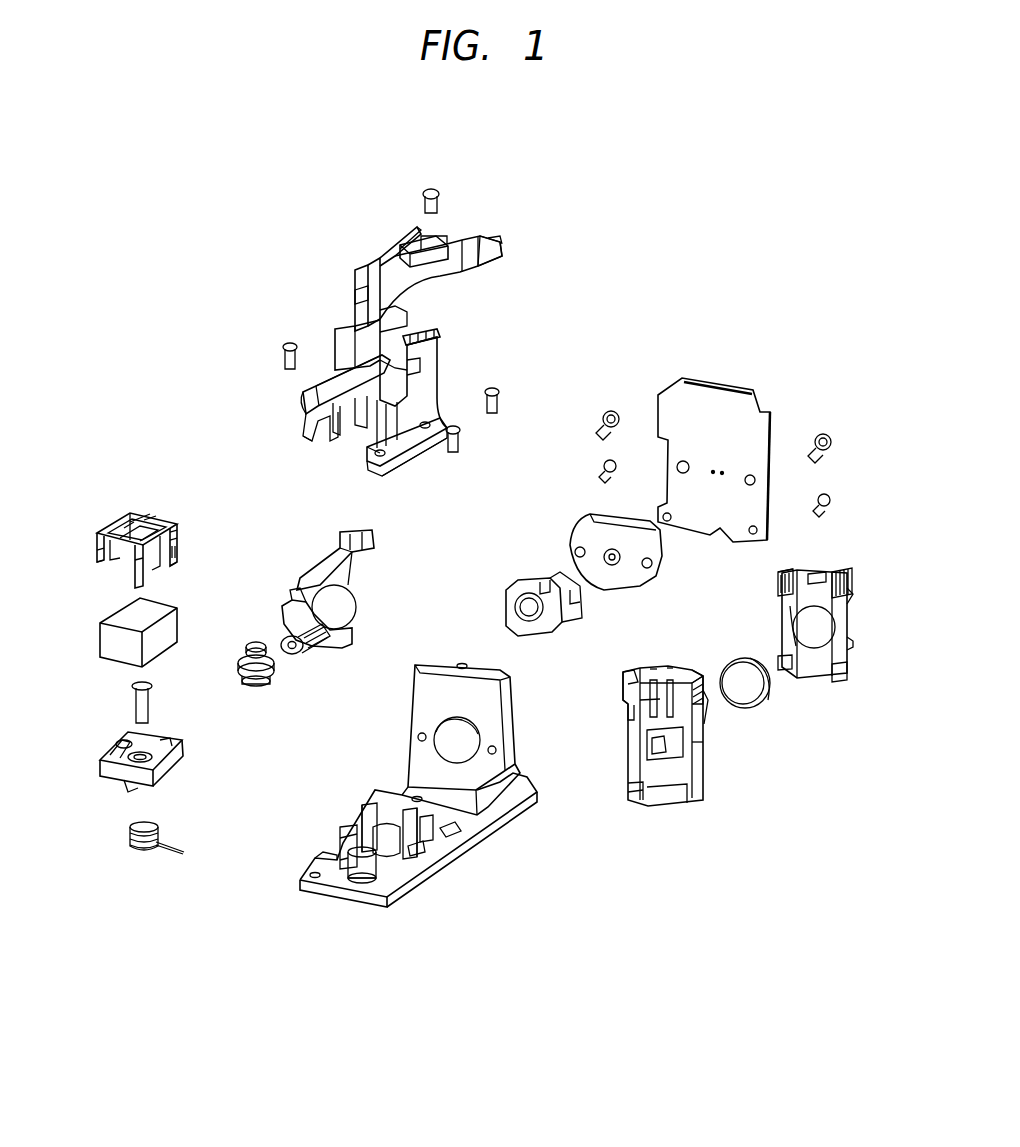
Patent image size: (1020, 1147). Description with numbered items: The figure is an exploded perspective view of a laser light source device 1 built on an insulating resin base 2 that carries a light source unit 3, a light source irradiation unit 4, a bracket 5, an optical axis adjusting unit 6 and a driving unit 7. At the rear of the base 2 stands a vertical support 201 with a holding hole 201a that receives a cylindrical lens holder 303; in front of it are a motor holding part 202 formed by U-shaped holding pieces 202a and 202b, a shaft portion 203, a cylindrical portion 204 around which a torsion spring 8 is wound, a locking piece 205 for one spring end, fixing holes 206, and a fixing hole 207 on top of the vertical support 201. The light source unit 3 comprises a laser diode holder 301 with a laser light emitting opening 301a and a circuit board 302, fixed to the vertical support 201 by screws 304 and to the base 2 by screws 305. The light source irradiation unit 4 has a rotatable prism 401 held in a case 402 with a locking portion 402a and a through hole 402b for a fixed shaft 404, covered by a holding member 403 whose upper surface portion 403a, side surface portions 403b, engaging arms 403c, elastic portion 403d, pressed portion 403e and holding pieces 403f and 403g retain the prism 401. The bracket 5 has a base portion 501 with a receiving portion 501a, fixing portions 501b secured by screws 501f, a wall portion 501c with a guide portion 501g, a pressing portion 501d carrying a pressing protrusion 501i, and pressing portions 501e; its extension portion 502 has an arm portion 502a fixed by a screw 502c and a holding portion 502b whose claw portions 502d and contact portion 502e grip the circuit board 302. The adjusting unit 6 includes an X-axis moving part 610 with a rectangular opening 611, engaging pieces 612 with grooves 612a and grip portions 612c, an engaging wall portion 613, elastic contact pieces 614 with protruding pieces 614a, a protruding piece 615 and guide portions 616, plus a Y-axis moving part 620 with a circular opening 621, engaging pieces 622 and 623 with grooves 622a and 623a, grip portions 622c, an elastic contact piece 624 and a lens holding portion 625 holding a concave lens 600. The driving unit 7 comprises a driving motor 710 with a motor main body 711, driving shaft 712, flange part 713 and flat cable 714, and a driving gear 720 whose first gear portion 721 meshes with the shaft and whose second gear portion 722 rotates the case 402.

The laser light source device 1 is at (322, 194).
The base 2 is at (524, 818).
The light source unit 3 is at (722, 360).
The light source irradiation unit 4 is at (110, 420).
The bracket 5 is at (398, 236).
The optical axis adjusting unit 6 is at (768, 760).
The driving unit 7 is at (306, 564).
The torsion spring 8 is at (136, 854).
The vertical support 201 is at (514, 696).
The holding hole 201a is at (434, 722).
The motor holding part 202 is at (356, 782).
The holding piece 202a is at (366, 812).
The holding piece 202b is at (432, 856).
The shaft portion 203 is at (335, 845).
The cylindrical portion 204 is at (342, 870).
The locking piece 205 is at (368, 884).
The fixing hole 206 is at (462, 832).
The fixing hole 207 is at (462, 662).
The laser diode holder 301 is at (568, 528).
The laser light emitting opening 301a is at (612, 548).
The circuit board 302 is at (762, 404).
The lens holder 303 is at (518, 596).
The screw 304 is at (598, 418).
The screw 305 is at (596, 466).
The prism 401 is at (178, 618).
The case 402 is at (176, 752).
The locking portion 402a is at (128, 790).
The through hole 402b is at (122, 746).
The holding member 403 is at (172, 520).
The upper surface portion 403a is at (137, 512).
The side surface portion 403b is at (103, 556).
The engaging arm 403c is at (172, 566).
The elastic portion 403d is at (130, 524).
The pressed portion 403e is at (150, 520).
The holding piece 403f is at (134, 566).
The holding piece 403g is at (176, 544).
The fixed shaft 404 is at (152, 704).
The base portion 501 is at (320, 362).
The receiving portion 501a is at (398, 388).
The fixing portion 501b is at (400, 458).
The wall portion 501c is at (448, 358).
The pressing portion 501d is at (318, 388).
The pressing portion 501e is at (374, 453).
The screw 501f is at (282, 352).
The guide portion 501g is at (418, 336).
The pressing protrusion 501i is at (310, 412).
The extension portion 502 is at (376, 280).
The arm portion 502a is at (366, 290).
The holding portion 502b is at (486, 270).
The screw 502c is at (432, 188).
The claw portion 502d is at (492, 246).
The contact portion 502e is at (446, 240).
The concave lens 600 is at (734, 656).
The X-axis moving part 610 is at (664, 804).
The rectangular opening 611 is at (648, 748).
The engaging piece 612 is at (626, 704).
The groove 612a is at (708, 748).
The grip portion 612c is at (703, 670).
The engaging wall portion 613 is at (650, 806).
The elastic contact piece 614 is at (644, 676).
The protruding piece 614a is at (640, 708).
The protruding piece 615 is at (670, 668).
The guide portion 616 is at (650, 670).
The Y-axis moving part 620 is at (802, 674).
The circular opening 621 is at (796, 624).
The engaging piece 622 is at (778, 584).
The groove 622a is at (782, 568).
The grip portion 622c is at (848, 560).
The engaging piece 623 is at (836, 682).
The groove 623a is at (850, 658).
The elastic contact piece 624 is at (814, 578).
The lens holding portion 625 is at (850, 598).
The driving motor 710 is at (356, 606).
The motor main body 711 is at (352, 596).
The driving shaft 712 is at (306, 656).
The flange part 713 is at (352, 632).
The flat cable 714 is at (330, 544).
The driving gear 720 is at (272, 682).
The first gear portion 721 is at (242, 680).
The second gear portion 722 is at (246, 656).